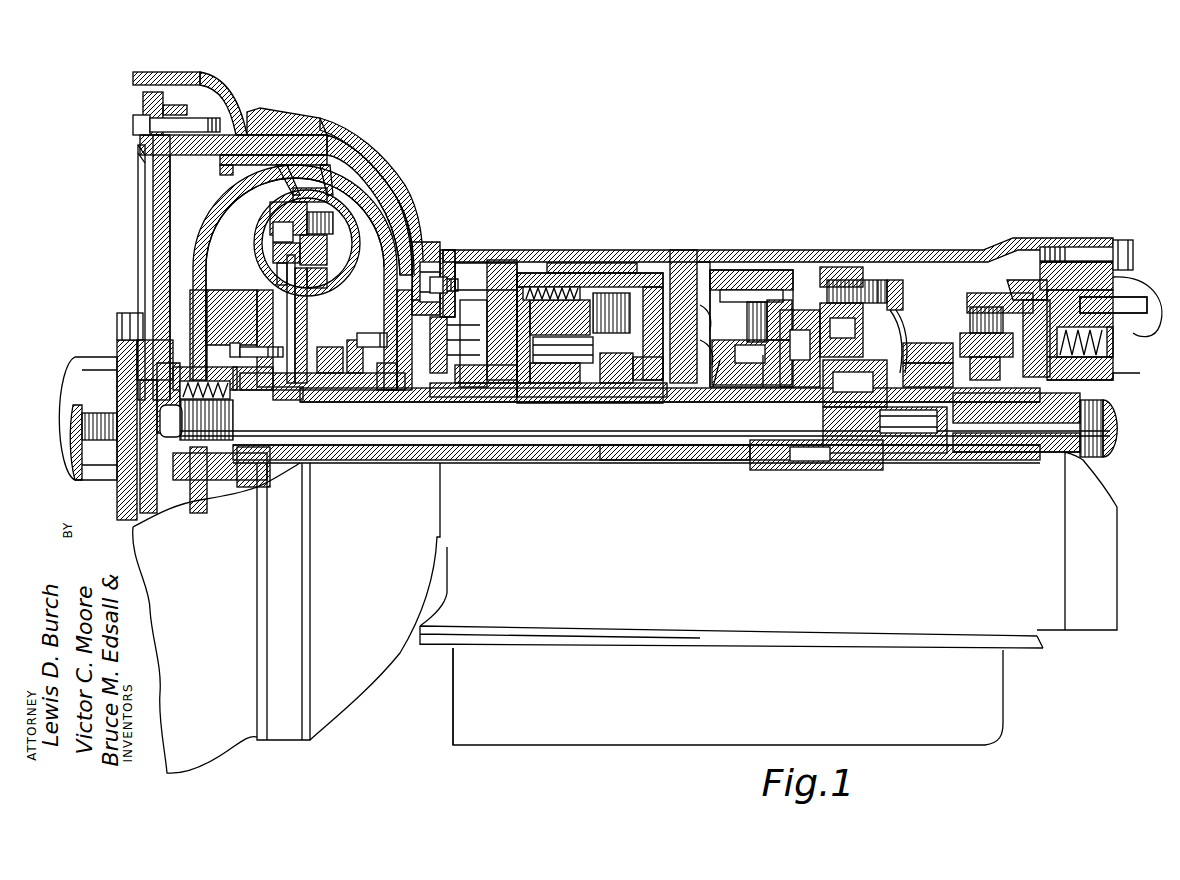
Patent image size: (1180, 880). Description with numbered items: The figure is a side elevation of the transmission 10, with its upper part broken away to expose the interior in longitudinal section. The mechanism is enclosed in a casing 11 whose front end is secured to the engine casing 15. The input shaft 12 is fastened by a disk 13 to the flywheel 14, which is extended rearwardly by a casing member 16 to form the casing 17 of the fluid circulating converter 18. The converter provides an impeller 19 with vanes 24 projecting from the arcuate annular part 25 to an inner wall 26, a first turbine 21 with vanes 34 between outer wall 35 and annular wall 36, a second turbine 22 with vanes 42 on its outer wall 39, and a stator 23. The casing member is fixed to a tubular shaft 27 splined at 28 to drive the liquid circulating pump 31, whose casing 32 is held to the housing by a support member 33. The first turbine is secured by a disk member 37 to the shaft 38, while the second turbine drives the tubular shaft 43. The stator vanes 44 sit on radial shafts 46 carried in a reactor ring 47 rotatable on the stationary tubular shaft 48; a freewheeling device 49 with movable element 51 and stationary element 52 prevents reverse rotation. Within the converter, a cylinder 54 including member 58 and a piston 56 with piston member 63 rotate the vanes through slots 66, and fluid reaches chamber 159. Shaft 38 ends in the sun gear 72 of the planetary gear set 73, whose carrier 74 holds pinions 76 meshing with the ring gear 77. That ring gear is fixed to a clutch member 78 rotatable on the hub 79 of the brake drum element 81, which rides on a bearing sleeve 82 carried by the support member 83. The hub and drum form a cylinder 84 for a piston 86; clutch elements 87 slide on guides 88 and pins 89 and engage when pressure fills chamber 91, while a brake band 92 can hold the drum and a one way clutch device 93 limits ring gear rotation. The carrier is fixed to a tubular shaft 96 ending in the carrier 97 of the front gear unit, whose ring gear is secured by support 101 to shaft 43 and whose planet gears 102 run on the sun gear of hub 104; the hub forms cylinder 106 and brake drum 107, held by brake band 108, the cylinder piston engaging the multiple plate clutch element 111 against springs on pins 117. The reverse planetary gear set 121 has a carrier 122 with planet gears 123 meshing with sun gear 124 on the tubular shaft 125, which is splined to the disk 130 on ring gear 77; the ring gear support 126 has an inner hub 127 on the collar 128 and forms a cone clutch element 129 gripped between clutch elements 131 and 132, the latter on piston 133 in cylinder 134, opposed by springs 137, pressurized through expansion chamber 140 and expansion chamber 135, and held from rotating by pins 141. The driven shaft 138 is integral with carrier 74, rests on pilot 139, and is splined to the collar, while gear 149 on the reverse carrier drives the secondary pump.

The transmission 10 is at (455, 620).
The casing 11 is at (942, 253).
The input shaft 12 is at (83, 372).
The disk 13 is at (140, 218).
The flywheel 14 is at (158, 178).
The engine casing 15 is at (173, 72).
The casing member 16 is at (238, 133).
The casing 17 is at (360, 166).
The fluid circulating converter 18 is at (390, 176).
The impeller 19 is at (383, 216).
The first turbine 21 is at (292, 187).
The second turbine 22 is at (230, 223).
The stator 23 is at (328, 306).
The vanes 24 is at (393, 240).
The arcuate and annular part 25 is at (392, 192).
The inner wall 26 is at (333, 272).
The tubular shaft 27 is at (388, 376).
The spline 28 is at (467, 378).
The liquid circulating pump 31 is at (458, 268).
The pump casing 32 is at (426, 323).
The support member 33 is at (466, 312).
The vanes 34 is at (300, 150).
The outer wall 35 is at (258, 156).
The annular wall 36 is at (337, 203).
The disk member 37 is at (218, 206).
The shaft 38 is at (374, 440).
The outer annular wall 39 is at (258, 288).
The vanes 42 is at (218, 244).
The tubular shaft 43 is at (411, 454).
The stator vanes 44 is at (268, 328).
The radially disposed shaft 46 is at (275, 263).
The reactor ring 47 is at (288, 390).
The tubular shaft 48 is at (450, 388).
The freewheeling device 49 is at (340, 365).
The movable element 51 is at (320, 365).
The stationary element 52 is at (323, 374).
The cylinder 54 is at (268, 248).
The piston 56 is at (342, 241).
The cylinder member 58 is at (330, 252).
The piston member 63 is at (275, 220).
The slots 66 is at (287, 283).
The sun gear 72 is at (860, 457).
The planetary gear set 73 is at (843, 310).
The carrier 74 is at (897, 333).
The pinions 76 is at (870, 280).
The ring gear 77 is at (880, 283).
The clutch member 78 is at (850, 270).
The hub 79 is at (763, 384).
The brake drum element 81 is at (727, 268).
The bearing sleeve 82 is at (690, 393).
The support member 83 is at (677, 273).
The cylinder 84 is at (707, 300).
The piston 86 is at (713, 388).
The clutch elements 87 is at (768, 303).
The guides 88 is at (711, 344).
The pins 89 is at (747, 290).
The chamber 91 is at (707, 311).
The brake band 92 is at (707, 303).
The one way clutch device 93 is at (813, 360).
The tubular shaft 96 is at (730, 455).
The carrier 97 is at (523, 388).
The support 101 is at (490, 314).
The planet gears 102 is at (567, 367).
The hub 104 is at (613, 378).
The cylinder 106 is at (667, 382).
The brake drum 107 is at (527, 277).
The brake band 108 is at (620, 270).
The multiple plate clutch element 111 is at (603, 283).
The pins 117 is at (557, 283).
The planetary gear set 121 is at (976, 283).
The carrier 122 is at (967, 347).
The planet gears 123 is at (967, 310).
The sun gear 124 is at (937, 373).
The tubular shaft 125 is at (950, 433).
The support 126 is at (1010, 301).
The inner hub 127 is at (1067, 374).
The collar 128 is at (1033, 417).
The cone clutch element 129 is at (1057, 293).
The disk 130 is at (887, 273).
The clutch element 131 is at (1033, 258).
The clutch element 132 is at (1080, 277).
The piston 133 is at (1123, 337).
The cylinder 134 is at (1110, 354).
The expansion chamber 135 is at (1113, 303).
The springs 137 is at (1113, 360).
The driven shaft 138 is at (1007, 453).
The pilot 139 is at (930, 433).
The expansion chamber 140 is at (1120, 243).
The pins 141 is at (1147, 284).
The gear 149 is at (920, 367).
The chamber 159 is at (178, 296).